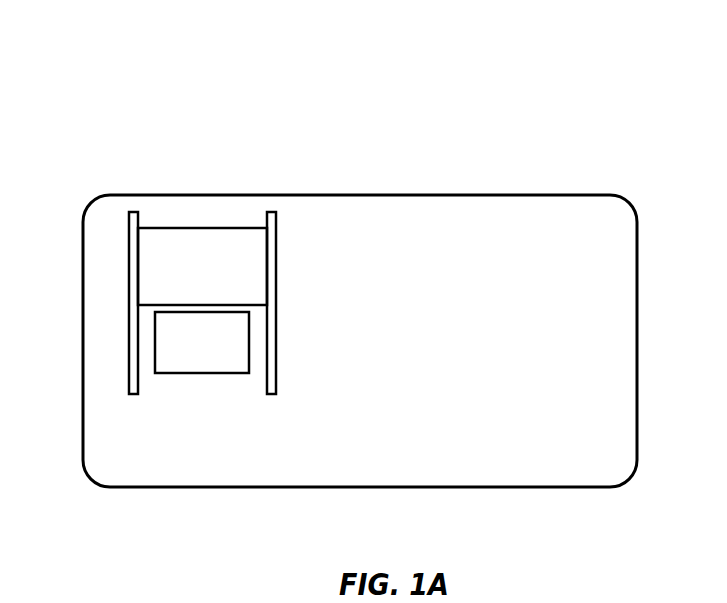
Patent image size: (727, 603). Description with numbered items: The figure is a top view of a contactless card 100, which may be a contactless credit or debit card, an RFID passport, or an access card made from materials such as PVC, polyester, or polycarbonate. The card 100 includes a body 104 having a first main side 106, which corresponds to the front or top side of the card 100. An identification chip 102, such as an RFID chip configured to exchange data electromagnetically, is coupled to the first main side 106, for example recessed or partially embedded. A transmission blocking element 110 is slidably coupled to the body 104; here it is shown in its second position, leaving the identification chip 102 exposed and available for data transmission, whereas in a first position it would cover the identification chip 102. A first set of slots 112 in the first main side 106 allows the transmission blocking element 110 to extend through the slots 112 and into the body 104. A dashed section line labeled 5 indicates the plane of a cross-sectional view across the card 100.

The contactless card 100 is at (360, 288).
The identification chip 102 is at (168, 366).
The body 104 is at (444, 203).
The first main side 106 is at (557, 218).
The transmission blocking element 110 is at (186, 243).
The first set of slots 112 is at (134, 217).
The section line 5- 5 is at (682, 341).